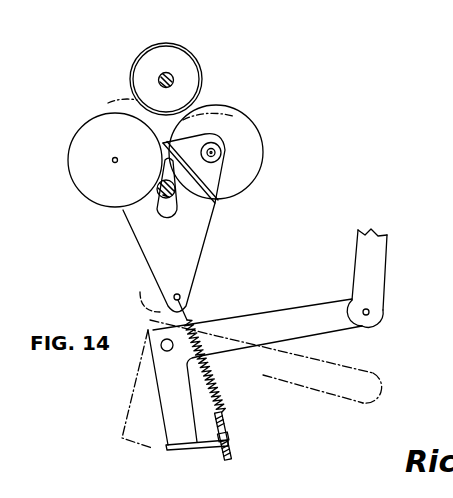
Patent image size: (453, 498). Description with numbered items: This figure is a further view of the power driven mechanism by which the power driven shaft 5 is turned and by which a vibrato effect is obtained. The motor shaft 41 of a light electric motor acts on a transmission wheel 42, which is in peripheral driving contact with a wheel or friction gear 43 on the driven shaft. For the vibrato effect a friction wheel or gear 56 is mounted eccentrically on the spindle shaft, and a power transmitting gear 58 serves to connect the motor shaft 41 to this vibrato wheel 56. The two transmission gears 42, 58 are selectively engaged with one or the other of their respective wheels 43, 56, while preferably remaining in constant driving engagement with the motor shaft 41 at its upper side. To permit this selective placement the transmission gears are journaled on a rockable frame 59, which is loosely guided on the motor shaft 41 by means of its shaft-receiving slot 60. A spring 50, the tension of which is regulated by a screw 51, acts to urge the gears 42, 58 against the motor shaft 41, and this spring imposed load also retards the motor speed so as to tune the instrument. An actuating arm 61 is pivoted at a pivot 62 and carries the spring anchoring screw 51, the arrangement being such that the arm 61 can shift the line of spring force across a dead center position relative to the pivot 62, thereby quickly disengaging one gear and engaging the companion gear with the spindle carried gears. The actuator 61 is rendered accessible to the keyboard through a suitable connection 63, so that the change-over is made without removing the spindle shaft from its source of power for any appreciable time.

The friction wheel or gear 56 is at (168, 42).
The power driven shaft 5 is at (173, 80).
The wheel or friction gear 43 is at (163, 122).
The power transmitting gear 58 is at (75, 142).
The transmission wheel 42 is at (256, 152).
The motor shaft 41 is at (160, 198).
The shaft-receiving slot 60 is at (163, 218).
The rockable frame 59 is at (202, 235).
The connection 63 is at (380, 262).
The pivot 62 is at (161, 342).
The actuating arm 61 is at (165, 403).
The spring 50 is at (213, 388).
The screw 51 is at (222, 459).